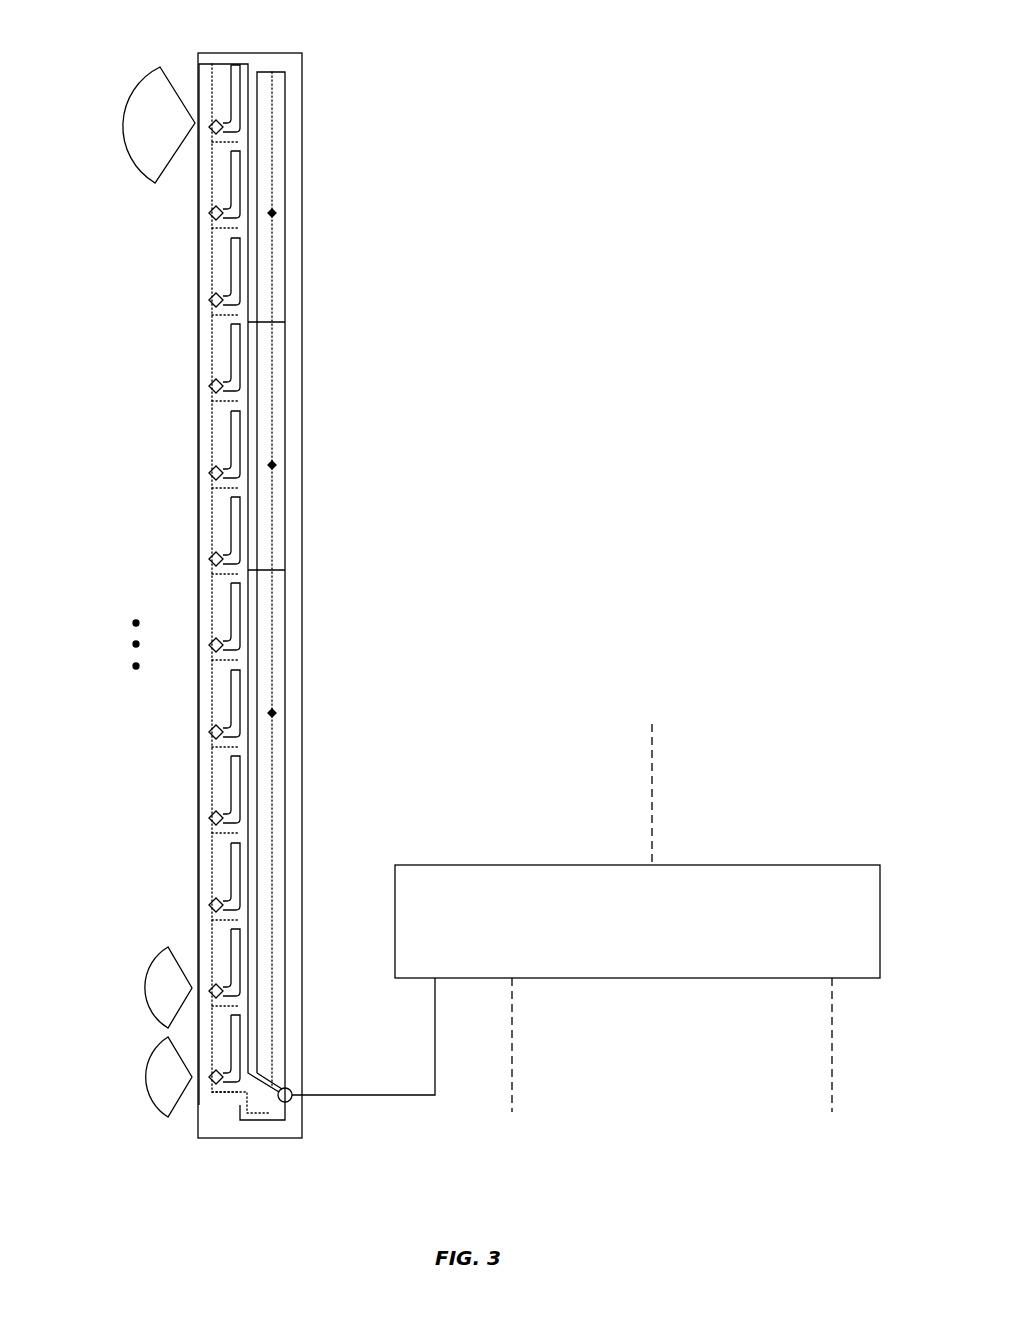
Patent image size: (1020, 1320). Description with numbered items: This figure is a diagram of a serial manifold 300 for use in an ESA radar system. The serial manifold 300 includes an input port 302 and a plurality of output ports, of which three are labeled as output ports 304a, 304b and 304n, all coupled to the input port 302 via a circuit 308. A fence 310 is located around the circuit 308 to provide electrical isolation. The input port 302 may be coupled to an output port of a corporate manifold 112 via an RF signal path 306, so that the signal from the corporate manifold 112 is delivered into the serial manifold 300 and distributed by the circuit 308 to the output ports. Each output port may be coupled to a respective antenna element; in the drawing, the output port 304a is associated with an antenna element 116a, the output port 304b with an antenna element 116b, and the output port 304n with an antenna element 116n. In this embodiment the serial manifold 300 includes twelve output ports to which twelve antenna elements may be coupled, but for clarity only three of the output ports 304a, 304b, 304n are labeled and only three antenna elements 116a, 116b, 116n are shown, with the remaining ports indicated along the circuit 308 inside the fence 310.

The serial manifold 300 is at (335, 128).
The circuit 308 is at (253, 515).
The fence 310 is at (272, 600).
The input port 302 is at (290, 1090).
The RF signal path 306 is at (362, 1097).
The corporate manifold 112 is at (637, 918).
The output port 304n is at (210, 131).
The output port 304b is at (212, 988).
The output port 304a is at (212, 1082).
The antenna element 116n is at (123, 130).
The antenna element 116b is at (150, 962).
The antenna element 116a is at (150, 1093).